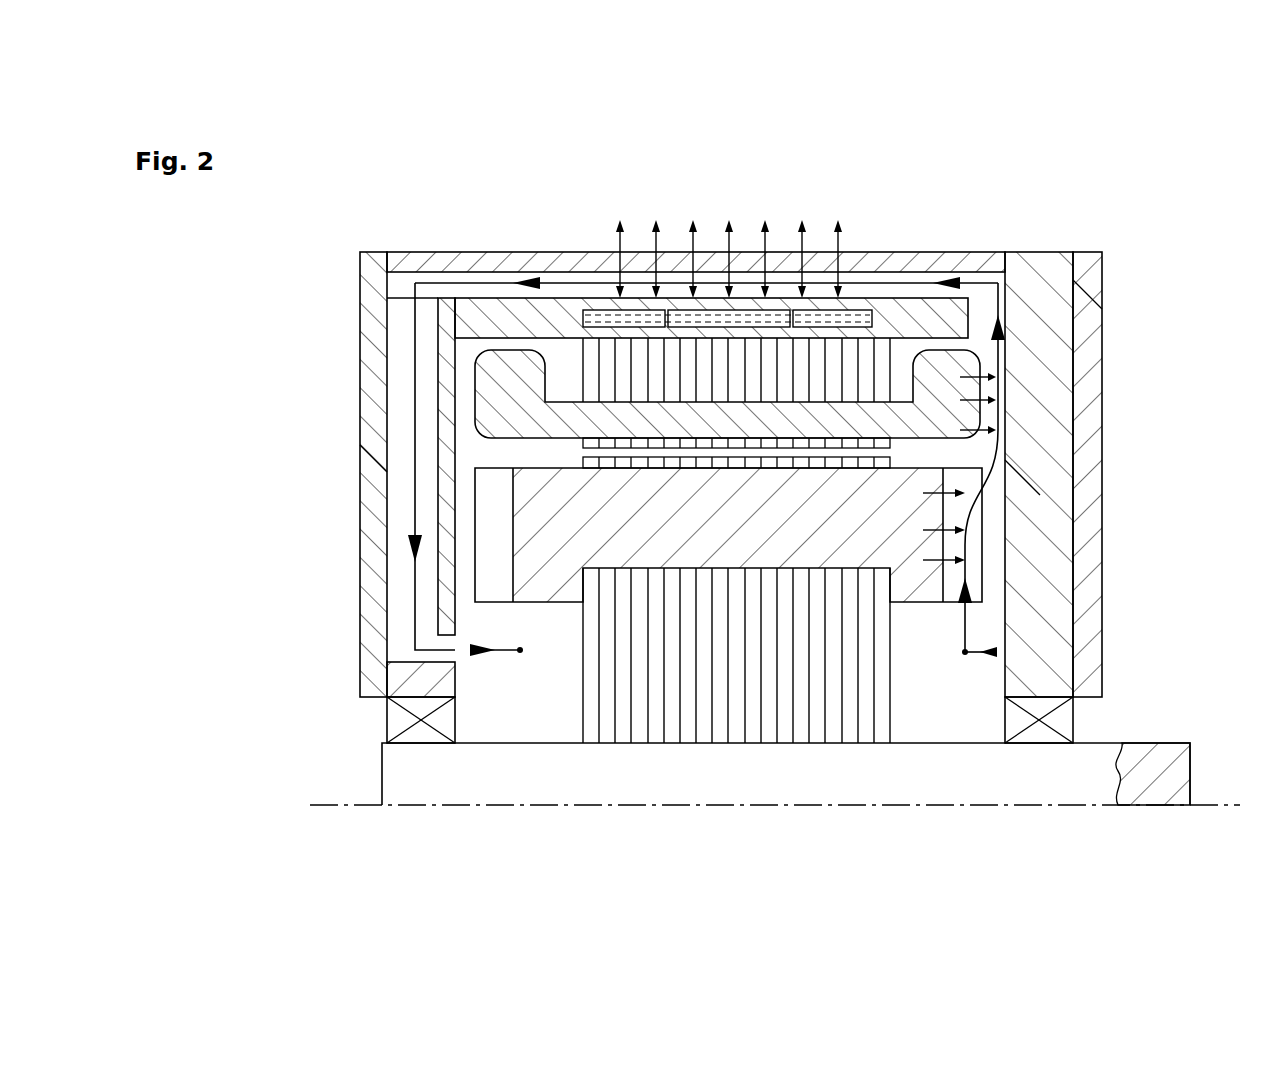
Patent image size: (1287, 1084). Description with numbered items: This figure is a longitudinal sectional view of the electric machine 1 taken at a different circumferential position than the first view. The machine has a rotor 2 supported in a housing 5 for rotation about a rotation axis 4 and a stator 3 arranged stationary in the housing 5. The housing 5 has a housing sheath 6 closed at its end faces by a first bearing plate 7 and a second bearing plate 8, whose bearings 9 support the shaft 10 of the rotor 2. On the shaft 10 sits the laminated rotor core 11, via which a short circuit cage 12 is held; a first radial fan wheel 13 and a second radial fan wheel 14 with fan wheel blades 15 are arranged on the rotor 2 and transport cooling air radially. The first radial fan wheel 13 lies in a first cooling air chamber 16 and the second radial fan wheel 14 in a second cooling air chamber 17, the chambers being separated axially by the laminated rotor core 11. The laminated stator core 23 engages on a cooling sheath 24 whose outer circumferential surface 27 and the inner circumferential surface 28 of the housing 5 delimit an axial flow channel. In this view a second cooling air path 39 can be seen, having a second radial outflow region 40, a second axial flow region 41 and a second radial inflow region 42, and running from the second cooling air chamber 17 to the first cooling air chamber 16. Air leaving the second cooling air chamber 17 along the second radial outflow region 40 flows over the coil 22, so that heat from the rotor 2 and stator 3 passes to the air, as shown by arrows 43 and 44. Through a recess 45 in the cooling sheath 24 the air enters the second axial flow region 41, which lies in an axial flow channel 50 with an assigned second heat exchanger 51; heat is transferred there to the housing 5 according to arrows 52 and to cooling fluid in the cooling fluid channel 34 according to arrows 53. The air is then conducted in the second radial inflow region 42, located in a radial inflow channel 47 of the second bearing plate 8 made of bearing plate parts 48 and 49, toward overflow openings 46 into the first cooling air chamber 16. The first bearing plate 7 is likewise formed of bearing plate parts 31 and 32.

The electric machine 1 is at (1165, 203).
The rotor 2 is at (545, 700).
The stator 3 is at (553, 358).
The rotation axis 4 is at (845, 807).
The housing 5 is at (308, 264).
The housing sheath 6 is at (405, 258).
The first bearing plate 7 is at (1090, 297).
The second bearing plate 8 is at (372, 486).
The bearings 9 is at (420, 733).
The shaft 10 is at (802, 777).
The laminated rotor core 11 is at (608, 719).
The short circuit cage 12 is at (905, 474).
The first radial fan wheel 13 is at (468, 530).
The second radial fan wheel 14 is at (995, 560).
The fan wheel blades 15 is at (483, 567).
The first cooling air chamber 16 is at (477, 628).
The second cooling air chamber 17 is at (975, 625).
The coil 22 is at (487, 370).
The laminated stator core 23 is at (673, 350).
The cooling sheath 24 is at (890, 314).
The outer circumferential surface 27 is at (465, 297).
The inner circumferential surface 28 is at (637, 272).
The bearing plate part 31 is at (1047, 388).
The bearing plate part 32 is at (1090, 608).
The cooling fluid channel 34 is at (865, 308).
The second cooling air path 39 is at (497, 268).
The second radial outflow region 40 is at (1012, 470).
The second axial flow region 41 is at (573, 283).
The second radial inflow region 42 is at (413, 380).
The arrows 43 is at (967, 517).
The arrows 44 is at (998, 417).
The recess 45 is at (982, 308).
The overflow openings 46 is at (447, 655).
The radial inflow channel 47 is at (405, 423).
The bearing plate part 48 is at (422, 716).
The bearing plate part 49 is at (368, 453).
The axial flow channel 50 is at (818, 278).
The second heat exchanger 51 is at (742, 283).
The arrows 52 is at (698, 243).
The arrows 53 is at (767, 287).